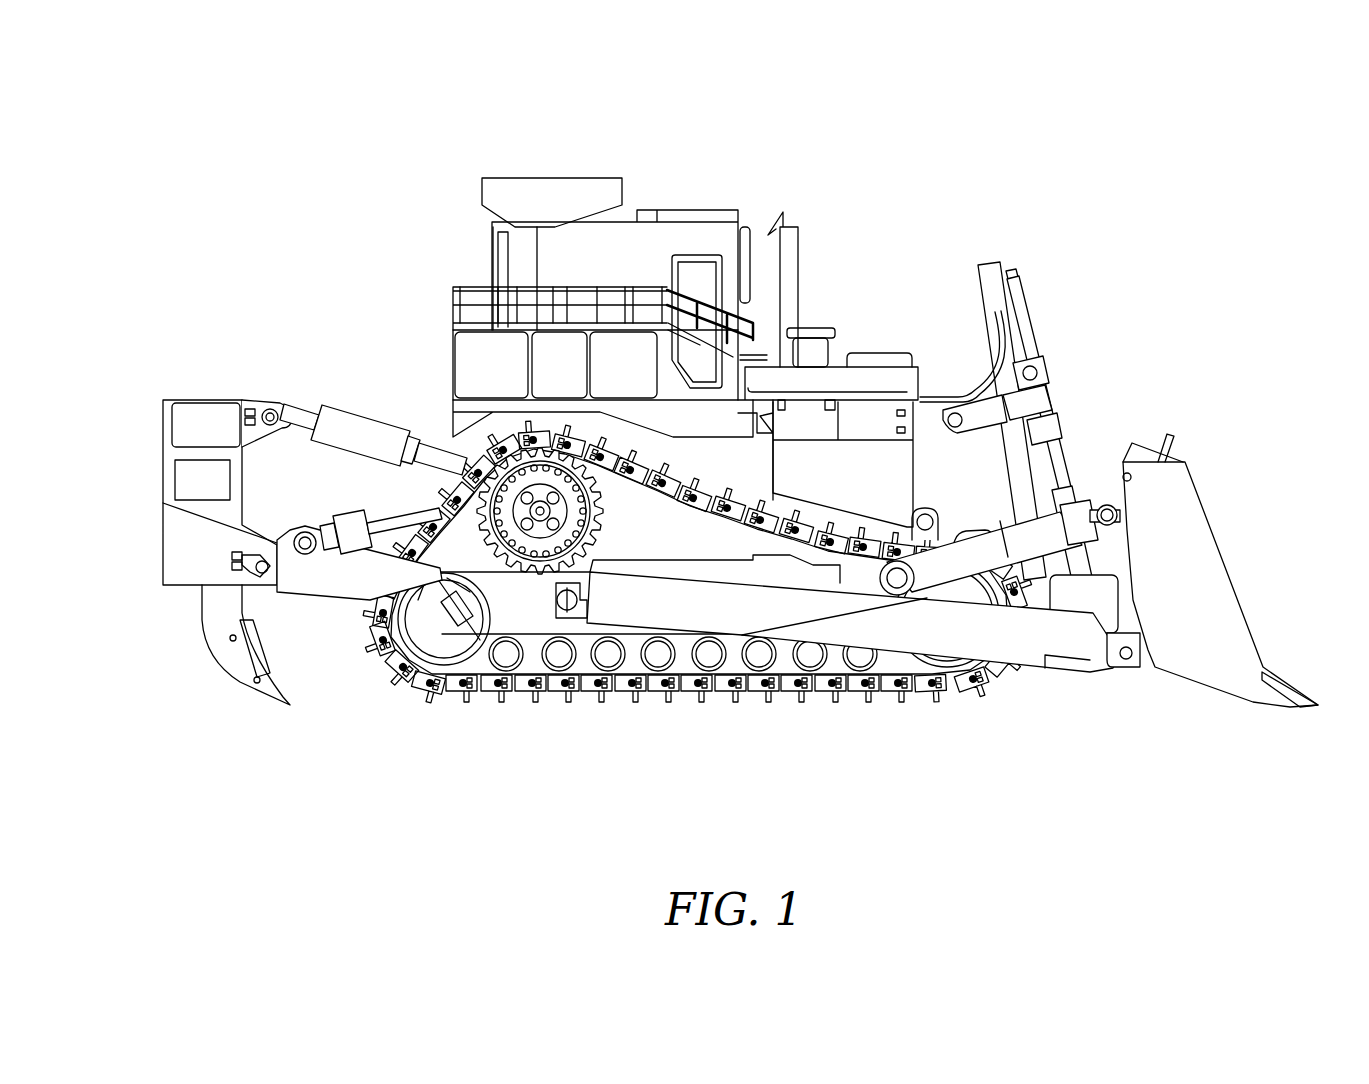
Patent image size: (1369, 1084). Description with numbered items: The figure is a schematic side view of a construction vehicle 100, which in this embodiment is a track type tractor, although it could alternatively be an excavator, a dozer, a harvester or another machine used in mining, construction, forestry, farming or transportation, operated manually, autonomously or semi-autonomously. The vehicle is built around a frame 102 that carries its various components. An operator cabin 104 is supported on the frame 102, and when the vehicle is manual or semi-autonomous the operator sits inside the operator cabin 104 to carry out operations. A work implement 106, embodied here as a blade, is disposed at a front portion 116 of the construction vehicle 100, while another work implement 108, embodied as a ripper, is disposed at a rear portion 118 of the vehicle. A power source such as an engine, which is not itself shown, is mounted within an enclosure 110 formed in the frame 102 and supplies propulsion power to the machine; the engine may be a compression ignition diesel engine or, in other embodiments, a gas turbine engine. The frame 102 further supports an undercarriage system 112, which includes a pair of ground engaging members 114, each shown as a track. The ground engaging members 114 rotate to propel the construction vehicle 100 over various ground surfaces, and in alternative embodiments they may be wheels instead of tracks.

The construction vehicle 100 is at (1193, 130).
The frame 102 is at (744, 457).
The operator cabin 104 is at (636, 238).
The work implement 106 is at (1195, 553).
The work implement 108 is at (207, 410).
The enclosure 110 is at (867, 450).
The undercarriage system 112 is at (371, 667).
The ground engaging members 114 is at (581, 693).
The front portion 116 is at (1313, 673).
The rear portion 118 is at (165, 663).